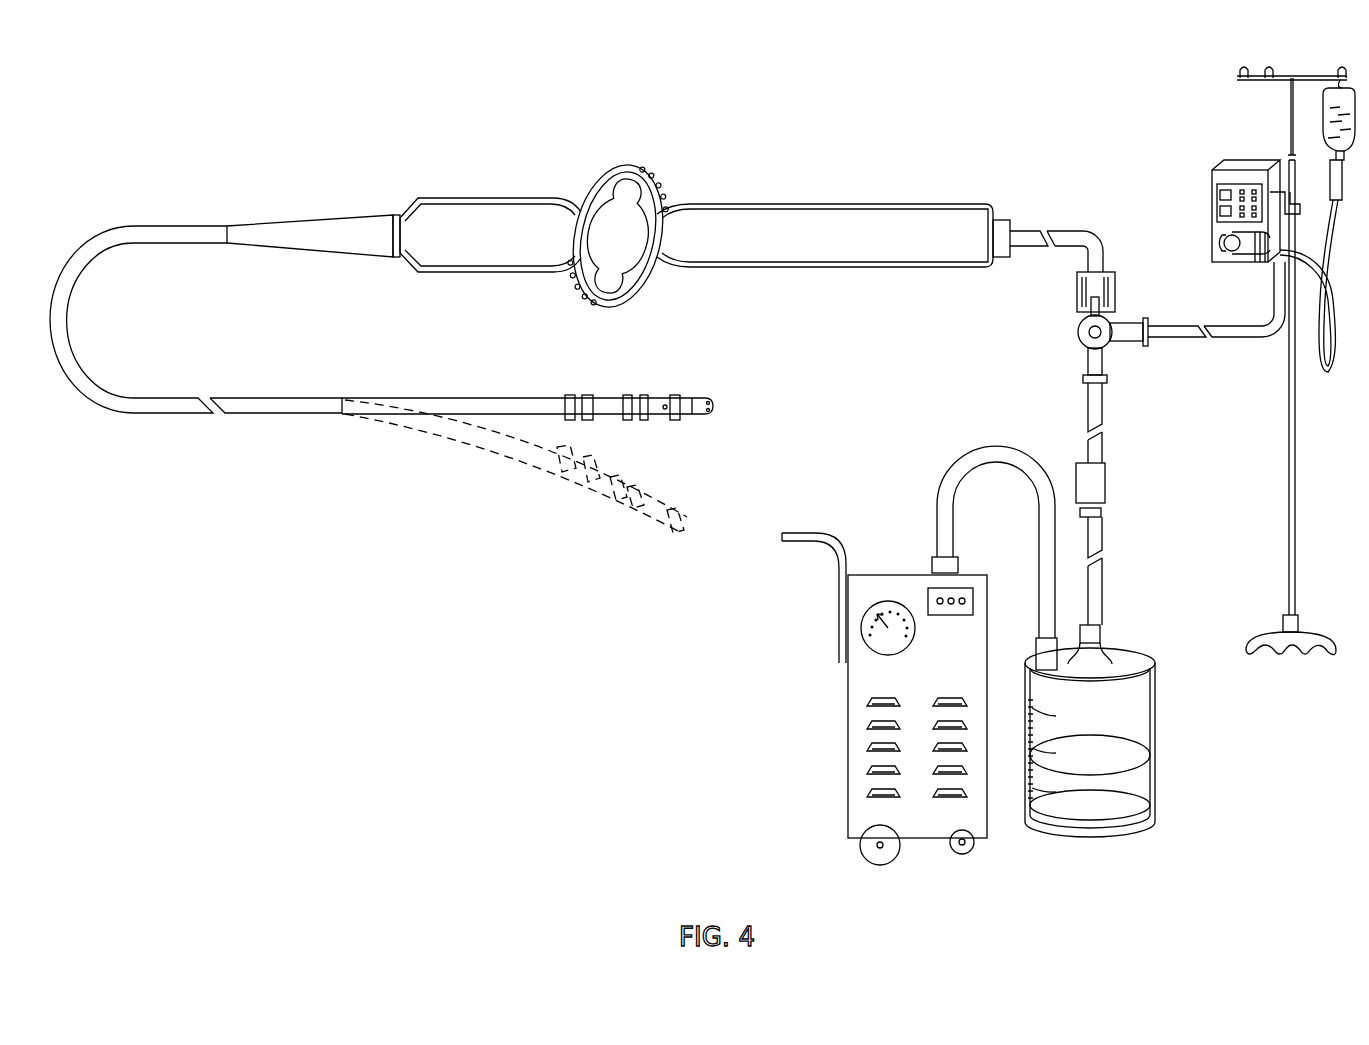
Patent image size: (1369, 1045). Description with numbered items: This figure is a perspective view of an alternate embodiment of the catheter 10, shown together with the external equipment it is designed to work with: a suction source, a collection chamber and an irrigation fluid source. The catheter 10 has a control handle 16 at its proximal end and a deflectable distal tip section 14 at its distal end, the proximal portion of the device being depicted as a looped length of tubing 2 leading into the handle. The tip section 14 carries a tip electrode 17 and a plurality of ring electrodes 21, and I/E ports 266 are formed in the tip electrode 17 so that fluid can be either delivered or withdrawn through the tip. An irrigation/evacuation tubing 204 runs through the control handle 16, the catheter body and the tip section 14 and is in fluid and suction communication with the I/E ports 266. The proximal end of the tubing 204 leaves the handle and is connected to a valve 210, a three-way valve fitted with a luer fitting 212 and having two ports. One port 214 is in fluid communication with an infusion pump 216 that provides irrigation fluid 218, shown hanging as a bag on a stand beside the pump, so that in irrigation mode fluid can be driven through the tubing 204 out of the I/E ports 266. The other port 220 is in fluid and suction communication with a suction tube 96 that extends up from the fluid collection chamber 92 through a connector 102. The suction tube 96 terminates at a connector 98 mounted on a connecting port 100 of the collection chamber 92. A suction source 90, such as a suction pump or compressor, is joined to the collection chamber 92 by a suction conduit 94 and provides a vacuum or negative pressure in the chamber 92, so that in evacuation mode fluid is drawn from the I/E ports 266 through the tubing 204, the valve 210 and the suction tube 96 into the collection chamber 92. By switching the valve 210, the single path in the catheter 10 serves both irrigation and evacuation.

The catheter 10 is at (208, 156).
The flexible tubing loop 2 is at (79, 250).
The control handle 16 is at (852, 269).
The deflectable distal tip section 14 is at (457, 398).
The ring electrodes 21 is at (629, 395).
The tip electrode 17 is at (700, 398).
The I/E ports 266 is at (716, 407).
The irrigation/evacuation (I/E) tubing 204 is at (1067, 231).
The luer fitting 212 is at (1077, 296).
The valve 210 is at (1078, 333).
The port 214 is at (1137, 322).
The port 220 is at (1088, 361).
The infusion pump 216 is at (1216, 168).
The irrigation fluid 218 is at (1328, 86).
The suction conduit 94 is at (1000, 447).
The suction tube 96 is at (1102, 605).
The connector 98 is at (1100, 641).
The connecting port 100 is at (1152, 680).
The fluid collection chamber 92 is at (1160, 744).
The suction source 90 is at (848, 706).
The connector 102 is at (1106, 486).